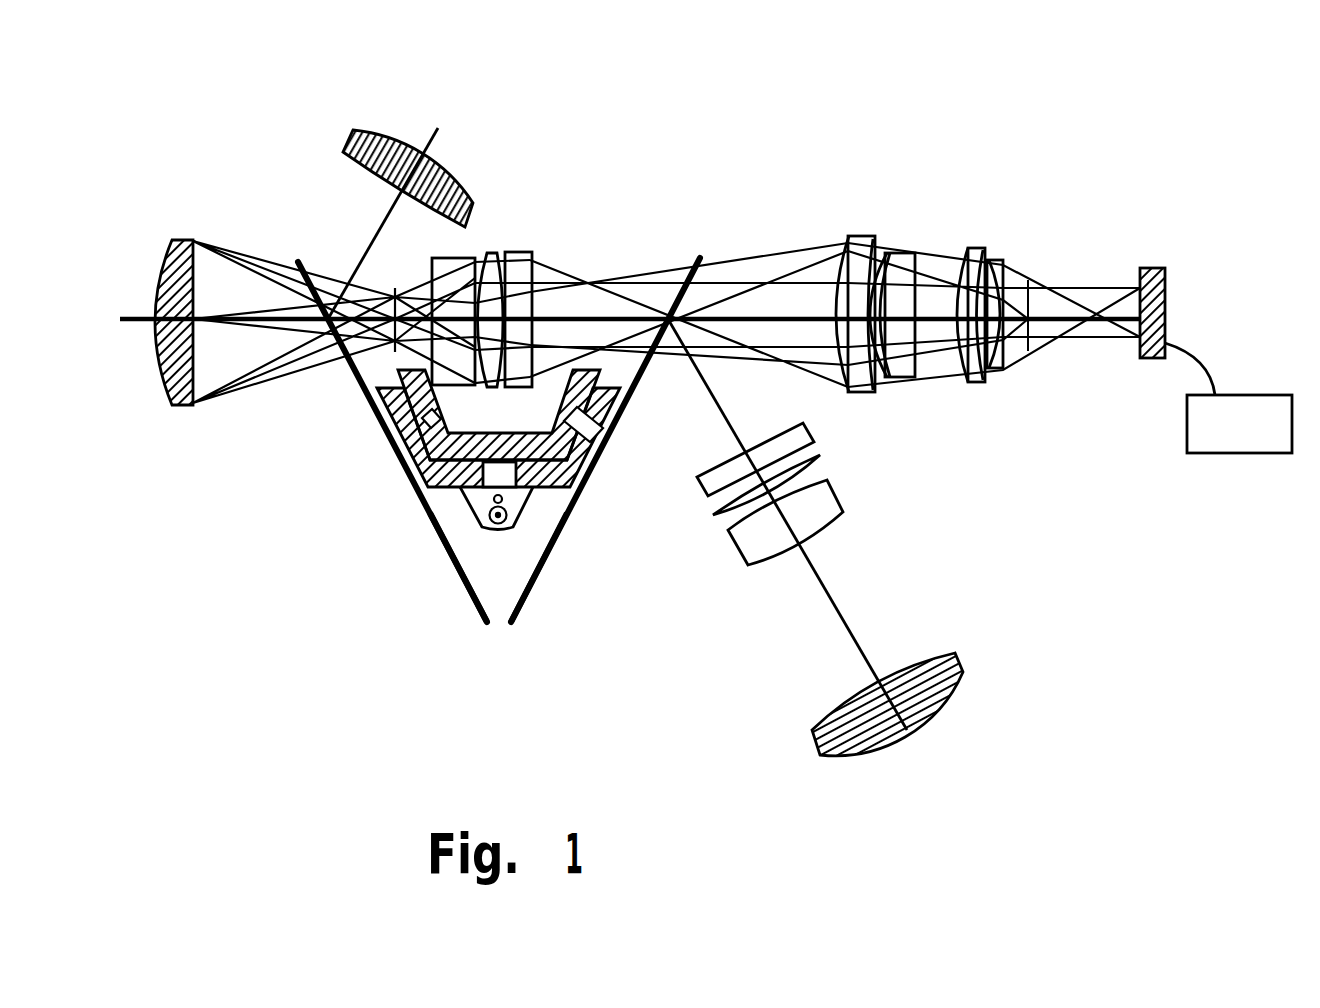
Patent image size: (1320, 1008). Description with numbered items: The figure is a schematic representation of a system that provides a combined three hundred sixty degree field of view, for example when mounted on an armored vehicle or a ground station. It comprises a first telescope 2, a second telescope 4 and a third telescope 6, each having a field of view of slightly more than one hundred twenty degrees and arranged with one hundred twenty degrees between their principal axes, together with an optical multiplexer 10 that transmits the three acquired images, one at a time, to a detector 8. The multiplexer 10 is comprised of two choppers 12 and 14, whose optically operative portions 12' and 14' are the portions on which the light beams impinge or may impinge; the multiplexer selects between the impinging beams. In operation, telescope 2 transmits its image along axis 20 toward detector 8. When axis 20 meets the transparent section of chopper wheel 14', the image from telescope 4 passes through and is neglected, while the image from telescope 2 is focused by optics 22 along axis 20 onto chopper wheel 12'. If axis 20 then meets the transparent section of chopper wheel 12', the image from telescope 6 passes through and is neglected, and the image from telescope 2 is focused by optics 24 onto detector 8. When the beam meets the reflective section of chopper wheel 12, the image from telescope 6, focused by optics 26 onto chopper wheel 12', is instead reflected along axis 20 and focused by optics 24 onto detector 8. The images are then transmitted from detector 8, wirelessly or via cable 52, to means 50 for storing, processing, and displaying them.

The first telescope 2 is at (156, 376).
The second telescope 4 is at (380, 140).
The third telescope 6 is at (922, 702).
The detector 8 is at (1165, 305).
The optical multiplexer 10 is at (322, 560).
The chopper 12 is at (605, 440).
The optically operative portion of chopper 12 12' is at (582, 578).
The chopper 14 is at (368, 442).
The optically operative portion of chopper 14 14' is at (415, 578).
The axis 20 is at (794, 318).
The optics 22 is at (535, 253).
The optics 24 is at (1025, 229).
The optics 26 is at (796, 417).
The means for storing, processing, and displaying 50 is at (1223, 453).
The cable 52 is at (1205, 367).